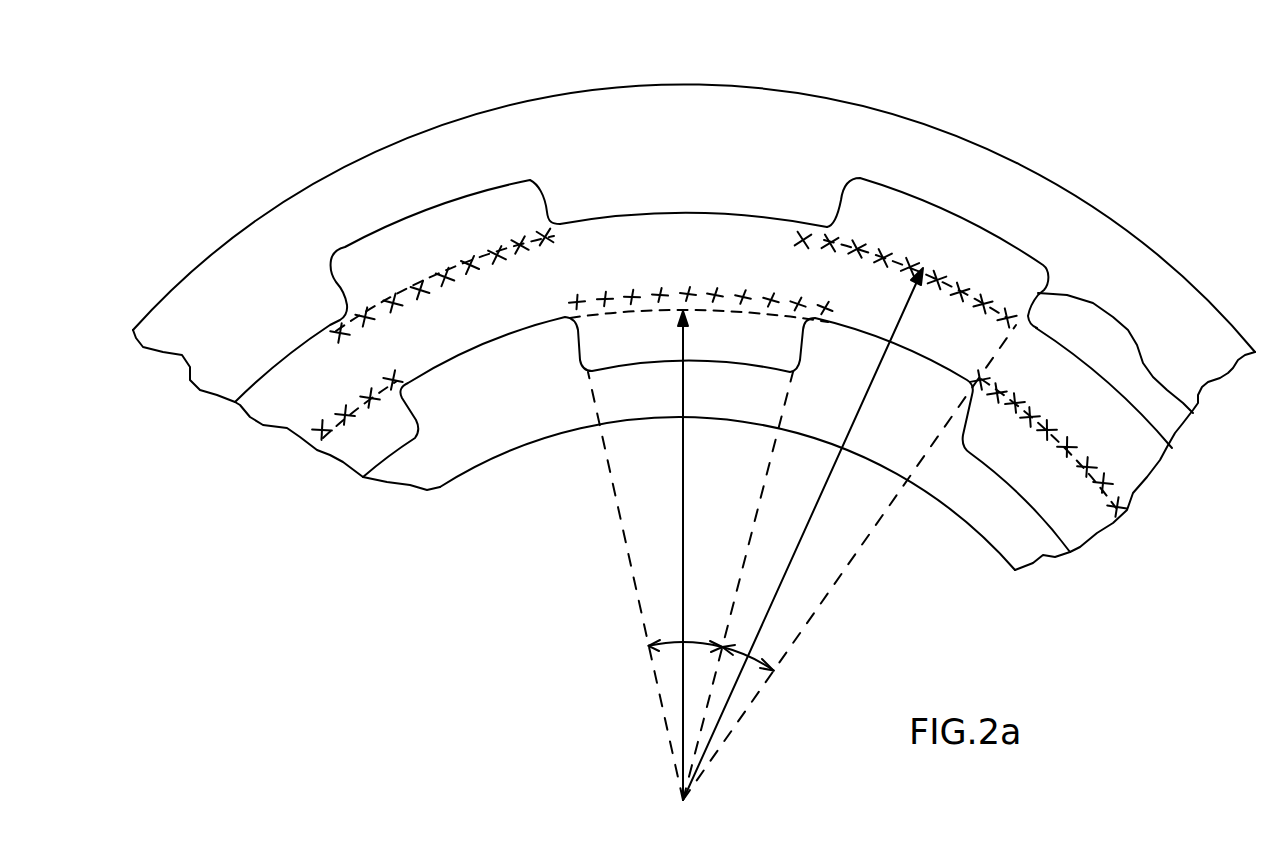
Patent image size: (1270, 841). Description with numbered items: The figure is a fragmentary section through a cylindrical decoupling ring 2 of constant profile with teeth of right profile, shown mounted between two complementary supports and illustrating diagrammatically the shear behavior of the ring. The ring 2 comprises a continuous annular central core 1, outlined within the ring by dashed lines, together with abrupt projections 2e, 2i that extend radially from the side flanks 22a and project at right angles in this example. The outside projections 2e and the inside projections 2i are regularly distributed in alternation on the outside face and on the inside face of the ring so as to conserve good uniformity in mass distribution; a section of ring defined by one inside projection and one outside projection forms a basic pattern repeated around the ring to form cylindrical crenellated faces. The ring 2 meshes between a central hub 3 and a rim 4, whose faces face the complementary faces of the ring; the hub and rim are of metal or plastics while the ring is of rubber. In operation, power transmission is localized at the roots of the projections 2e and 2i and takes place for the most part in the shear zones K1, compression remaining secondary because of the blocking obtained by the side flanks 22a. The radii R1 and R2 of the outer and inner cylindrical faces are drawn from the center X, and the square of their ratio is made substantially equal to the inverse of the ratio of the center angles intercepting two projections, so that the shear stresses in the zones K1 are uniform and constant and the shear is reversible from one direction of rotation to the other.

The continuous annular central core 1 is at (643, 257).
The cylindrical decoupling ring 2 is at (795, 192).
The outside projection 2e is at (1004, 260).
The inside projection 2i is at (770, 350).
The central hub 3 is at (900, 443).
The rim 4 is at (1176, 315).
The side flanks 22a is at (1193, 413).
The shear zones K1 is at (470, 257).
The radius of the outside cylindrical face R1 is at (803, 534).
The radius of the inside cylindrical face R2 is at (702, 555).
The center axis X is at (693, 820).